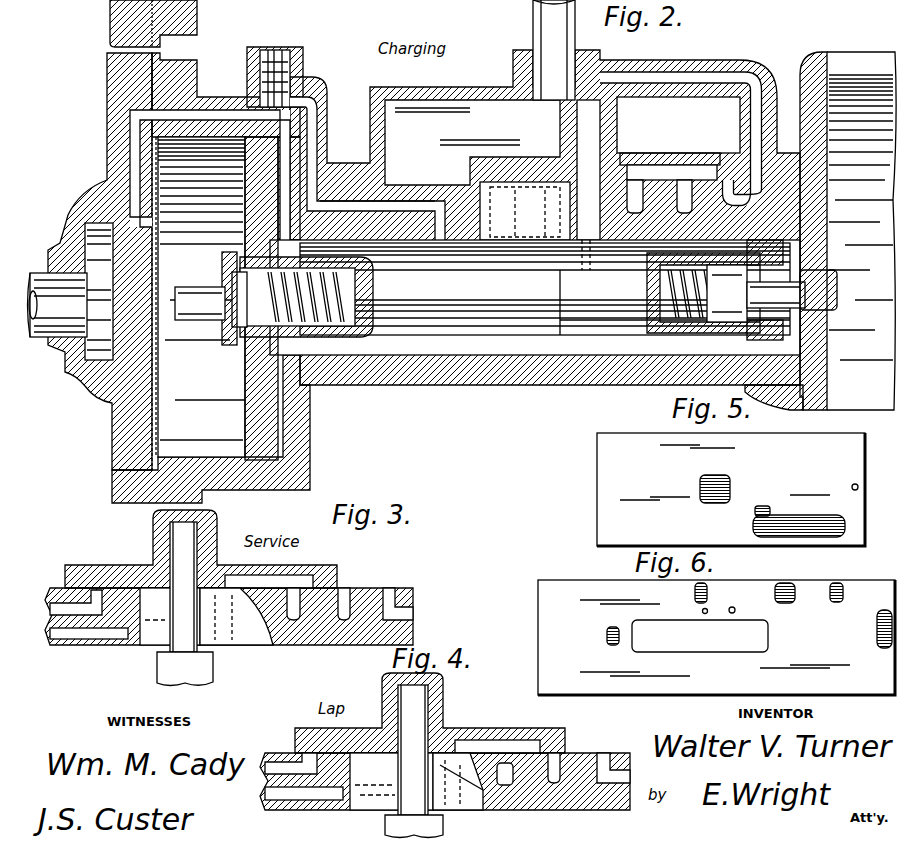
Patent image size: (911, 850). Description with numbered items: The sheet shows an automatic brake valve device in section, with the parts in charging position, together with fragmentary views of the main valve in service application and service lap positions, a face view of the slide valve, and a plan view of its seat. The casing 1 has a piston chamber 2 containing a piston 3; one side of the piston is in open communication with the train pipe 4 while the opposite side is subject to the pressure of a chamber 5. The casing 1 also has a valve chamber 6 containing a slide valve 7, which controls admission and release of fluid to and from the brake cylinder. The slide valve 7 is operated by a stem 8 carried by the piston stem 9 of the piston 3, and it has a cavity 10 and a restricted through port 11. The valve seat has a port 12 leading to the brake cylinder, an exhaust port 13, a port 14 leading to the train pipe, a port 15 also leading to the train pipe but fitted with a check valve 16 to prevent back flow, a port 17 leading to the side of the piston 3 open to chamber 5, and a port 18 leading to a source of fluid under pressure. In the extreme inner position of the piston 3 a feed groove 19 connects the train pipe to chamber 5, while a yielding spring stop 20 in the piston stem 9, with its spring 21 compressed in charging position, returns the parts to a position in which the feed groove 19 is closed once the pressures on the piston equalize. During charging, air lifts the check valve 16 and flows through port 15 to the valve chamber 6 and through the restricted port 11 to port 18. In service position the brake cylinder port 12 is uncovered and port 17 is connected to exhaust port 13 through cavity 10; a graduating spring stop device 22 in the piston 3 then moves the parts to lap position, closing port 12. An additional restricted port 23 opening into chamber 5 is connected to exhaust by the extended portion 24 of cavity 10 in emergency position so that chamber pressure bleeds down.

In FIG. 2, the casing 1 is at (190, 86).
In FIG. 2, the piston chamber 2 is at (178, 410).
In FIG. 2, the piston 3 is at (262, 378).
In FIG. 2, the train pipe 4 is at (58, 312).
In FIG. 2, the chamber 5 is at (850, 360).
In FIG. 2, the valve chamber 6 is at (481, 112).
In FIG. 2, the slide valve 7 is at (524, 162).
In FIG. 3, the slide valve 7 is at (135, 566).
In FIG. 4, the slide valve 7 is at (500, 730).
In FIG. 5, the slide valve 7 is at (607, 471).
In FIG. 6, the slide valve 7 is at (716, 637).
In FIG. 2, the stem 8 is at (580, 194).
In FIG. 3, the stem 8 is at (178, 608).
In FIG. 4, the stem 8 is at (396, 761).
In FIG. 2, the piston stem 9 is at (495, 302).
In FIG. 2, the cavity 10 is at (680, 172).
In FIG. 3, the cavity 10 is at (305, 580).
In FIG. 4, the cavity 10 is at (522, 742).
In FIG. 5, the cavity 10 is at (793, 525).
In FIG. 2, the through port 11 is at (727, 158).
In FIG. 5, the through port 11 is at (852, 486).
In FIG. 2, the port 12 is at (692, 206).
In FIG. 3, the port 12 is at (352, 596).
In FIG. 4, the port 12 is at (559, 760).
In FIG. 6, the port 12 is at (836, 604).
In FIG. 2, the exhaust port 13 is at (643, 205).
In FIG. 3, the exhaust port 13 is at (293, 620).
In FIG. 4, the exhaust port 13 is at (511, 790).
In FIG. 6, the exhaust port 13 is at (785, 604).
In FIG. 2, the port 14 is at (400, 230).
In FIG. 3, the port 14 is at (100, 633).
In FIG. 4, the port 14 is at (278, 794).
In FIG. 6, the port 14 is at (694, 592).
In FIG. 2, the port 15 is at (318, 112).
In FIG. 3, the port 15 is at (75, 612).
In FIG. 4, the port 15 is at (278, 768).
In FIG. 6, the port 15 is at (605, 636).
In FIG. 2, the check valve 16 is at (304, 70).
In FIG. 2, the port 17 is at (575, 240).
In FIG. 3, the port 17 is at (240, 600).
In FIG. 4, the port 17 is at (472, 800).
In FIG. 6, the port 17 is at (735, 609).
In FIG. 2, the port 18 is at (755, 203).
In FIG. 3, the port 18 is at (410, 608).
In FIG. 4, the port 18 is at (602, 800).
In FIG. 2, the feed groove 19 is at (292, 146).
In FIG. 2, the yielding spring stop 20 is at (815, 318).
In FIG. 2, the spring 21 is at (690, 326).
In FIG. 2, the graduating spring stop device 22 is at (206, 294).
In FIG. 6, the restricted port 23 is at (702, 611).
In FIG. 5, the extended portion 24 is at (762, 506).